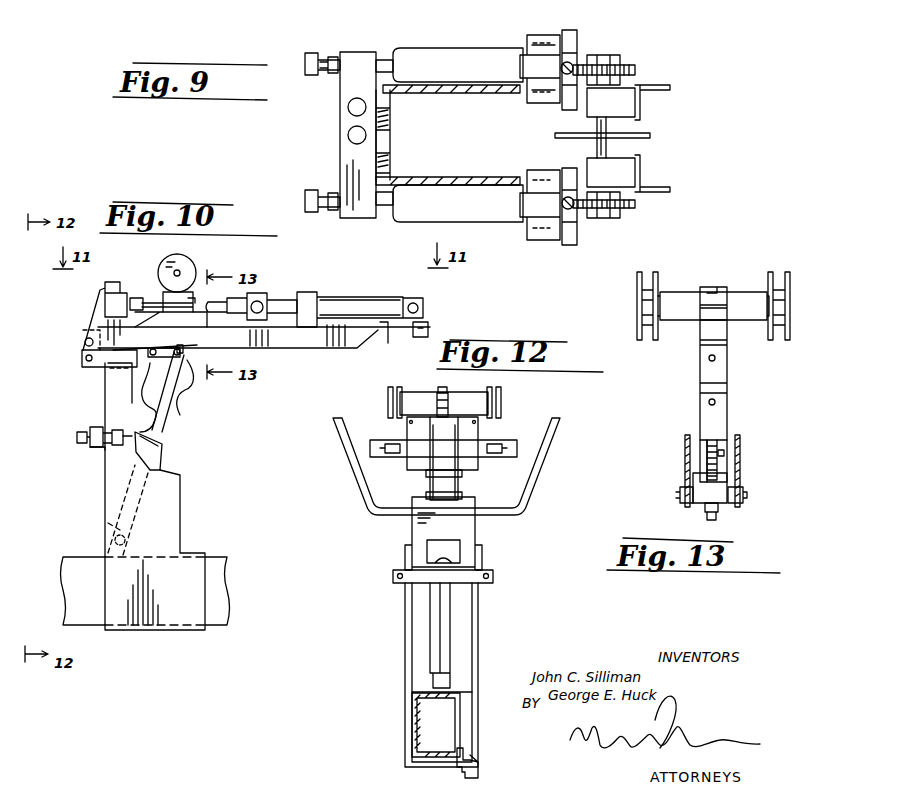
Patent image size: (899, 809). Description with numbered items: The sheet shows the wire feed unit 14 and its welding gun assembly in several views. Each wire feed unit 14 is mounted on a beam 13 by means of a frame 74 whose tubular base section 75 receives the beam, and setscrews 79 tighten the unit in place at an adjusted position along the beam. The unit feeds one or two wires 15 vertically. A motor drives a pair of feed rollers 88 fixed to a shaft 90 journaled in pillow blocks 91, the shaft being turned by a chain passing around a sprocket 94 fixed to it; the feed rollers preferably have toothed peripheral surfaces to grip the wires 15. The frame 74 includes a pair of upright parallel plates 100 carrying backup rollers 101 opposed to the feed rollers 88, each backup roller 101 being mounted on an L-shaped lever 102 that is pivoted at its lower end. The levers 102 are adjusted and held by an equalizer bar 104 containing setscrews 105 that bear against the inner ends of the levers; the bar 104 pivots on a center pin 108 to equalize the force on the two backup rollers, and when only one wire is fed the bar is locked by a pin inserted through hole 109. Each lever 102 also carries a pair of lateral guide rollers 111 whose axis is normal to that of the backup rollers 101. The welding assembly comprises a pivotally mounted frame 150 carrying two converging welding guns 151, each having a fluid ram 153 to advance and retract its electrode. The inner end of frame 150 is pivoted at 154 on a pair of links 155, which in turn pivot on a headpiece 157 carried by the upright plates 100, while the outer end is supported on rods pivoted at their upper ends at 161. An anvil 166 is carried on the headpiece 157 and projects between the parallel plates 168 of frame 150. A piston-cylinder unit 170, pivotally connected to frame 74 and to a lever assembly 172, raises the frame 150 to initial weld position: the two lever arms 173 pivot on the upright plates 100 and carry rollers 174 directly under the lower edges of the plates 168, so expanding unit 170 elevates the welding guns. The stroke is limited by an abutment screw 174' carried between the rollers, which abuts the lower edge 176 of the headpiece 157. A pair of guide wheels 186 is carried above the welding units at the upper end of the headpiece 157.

In FIG. 10, the beam 13 is at (220, 602).
In FIG. 12, the beam 13 is at (412, 735).
In FIG. 10, the wire feed unit 14 is at (329, 356).
In FIG. 12, the wire feed unit 14 is at (528, 413).
In FIG. 9, the wire 15 is at (574, 65).
In FIG. 10, the frame 74 is at (211, 641).
In FIG. 12, the frame 74 is at (400, 665).
In FIG. 12, the tubular base section 75 is at (408, 705).
In FIG. 12, the setscrew 79 is at (480, 768).
In FIG. 9, the feed roller 88 is at (635, 67).
In FIG. 9, the shaft 90 is at (606, 124).
In FIG. 9, the pillow block 91 is at (614, 111).
In FIG. 9, the sprocket 94 is at (645, 138).
In FIG. 9, the upright parallel plate 100 is at (442, 85).
In FIG. 10, the upright parallel plate 100 is at (180, 520).
In FIG. 12, the upright parallel plate 100 is at (408, 616).
In FIG. 9, the backup roller 101 is at (545, 53).
In FIG. 9, the L-shaped lever 102 is at (490, 76).
In FIG. 10, the L-shaped lever 102 is at (105, 449).
In FIG. 9, the equalizer bar 104 is at (340, 158).
In FIG. 10, the equalizer bar 104 is at (97, 428).
In FIG. 12, the equalizer bar 104 is at (482, 570).
In FIG. 9, the setscrew 105 is at (322, 76).
In FIG. 12, the setscrew 105 is at (397, 577).
In FIG. 9, the center pin 108 is at (348, 136).
In FIG. 9, the hole 109 is at (348, 112).
In FIG. 9, the lateral guide roller 111 is at (575, 38).
In FIG. 10, the pivotally mounted frame 150 is at (356, 350).
In FIG. 10, the welding gun 151 is at (284, 294).
In FIG. 10, the fluid ram 153 is at (352, 297).
In FIG. 10, the pivot 154 is at (85, 340).
In FIG. 12, the pivot 154 is at (465, 474).
In FIG. 10, the link 155 is at (82, 352).
In FIG. 12, the link 155 is at (465, 495).
In FIG. 10, the headpiece 157 is at (167, 296).
In FIG. 12, the headpiece 157 is at (443, 443).
In FIG. 13, the headpiece 157 is at (727, 340).
In FIG. 10, the pivot 161 is at (416, 337).
In FIG. 10, the anvil 166 is at (200, 349).
In FIG. 13, the anvil 166 is at (727, 372).
In FIG. 10, the parallel plate 168 is at (85, 320).
In FIG. 12, the parallel plate 168 is at (430, 464).
In FIG. 13, the parallel plate 168 is at (685, 463).
In FIG. 10, the piston-cylinder unit 170 is at (182, 451).
In FIG. 12, the piston-cylinder unit 170 is at (452, 656).
In FIG. 13, the lever assembly 172 is at (677, 486).
In FIG. 10, the lever arm 173 is at (176, 412).
In FIG. 13, the lever arm 173 is at (698, 503).
In FIG. 10, the roller 174 is at (182, 397).
In FIG. 13, the roller 174 is at (710, 502).
In FIG. 10, the abutment screw 174' is at (223, 387).
In FIG. 13, the abutment screw 174' is at (677, 454).
In FIG. 10, the lower edge 176 is at (171, 318).
In FIG. 13, the lower edge 176 is at (728, 452).
In FIG. 10, the guide wheel 186 is at (192, 262).
In FIG. 12, the guide wheel 186 is at (500, 392).
In FIG. 13, the guide wheel 186 is at (660, 283).